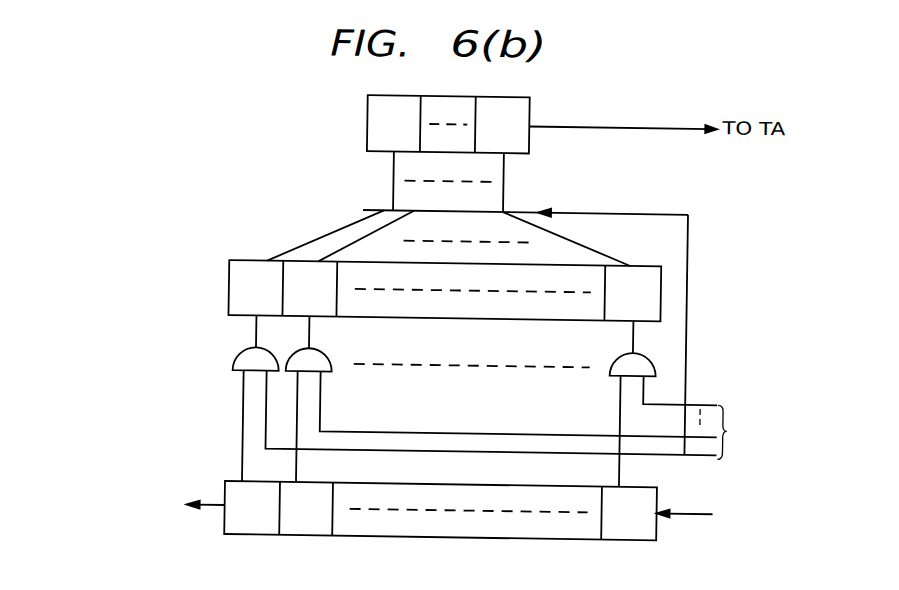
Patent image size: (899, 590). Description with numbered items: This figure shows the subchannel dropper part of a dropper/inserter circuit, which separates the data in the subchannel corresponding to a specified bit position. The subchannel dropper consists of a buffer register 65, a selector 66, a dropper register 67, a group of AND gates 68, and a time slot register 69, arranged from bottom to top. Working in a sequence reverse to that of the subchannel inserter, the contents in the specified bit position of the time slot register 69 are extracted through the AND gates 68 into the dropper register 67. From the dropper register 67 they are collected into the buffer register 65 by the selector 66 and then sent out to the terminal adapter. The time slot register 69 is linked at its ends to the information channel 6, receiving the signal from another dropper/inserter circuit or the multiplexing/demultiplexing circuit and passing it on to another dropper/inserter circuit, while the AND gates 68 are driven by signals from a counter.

The buffer register 65 is at (362, 124).
The selector 66 is at (362, 209).
The dropper register 67 is at (226, 288).
The group of AND gates 68 is at (230, 362).
The time slot register 69 is at (223, 472).
The information channel 6 is at (217, 505).